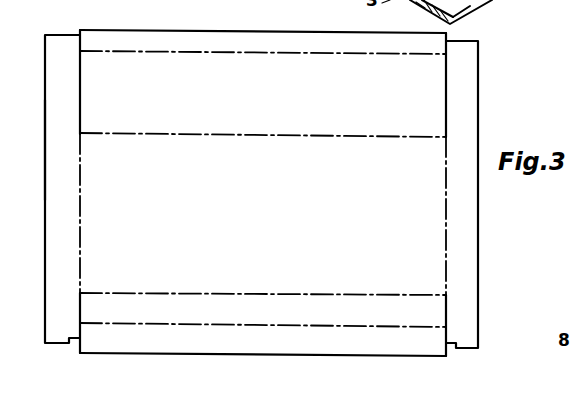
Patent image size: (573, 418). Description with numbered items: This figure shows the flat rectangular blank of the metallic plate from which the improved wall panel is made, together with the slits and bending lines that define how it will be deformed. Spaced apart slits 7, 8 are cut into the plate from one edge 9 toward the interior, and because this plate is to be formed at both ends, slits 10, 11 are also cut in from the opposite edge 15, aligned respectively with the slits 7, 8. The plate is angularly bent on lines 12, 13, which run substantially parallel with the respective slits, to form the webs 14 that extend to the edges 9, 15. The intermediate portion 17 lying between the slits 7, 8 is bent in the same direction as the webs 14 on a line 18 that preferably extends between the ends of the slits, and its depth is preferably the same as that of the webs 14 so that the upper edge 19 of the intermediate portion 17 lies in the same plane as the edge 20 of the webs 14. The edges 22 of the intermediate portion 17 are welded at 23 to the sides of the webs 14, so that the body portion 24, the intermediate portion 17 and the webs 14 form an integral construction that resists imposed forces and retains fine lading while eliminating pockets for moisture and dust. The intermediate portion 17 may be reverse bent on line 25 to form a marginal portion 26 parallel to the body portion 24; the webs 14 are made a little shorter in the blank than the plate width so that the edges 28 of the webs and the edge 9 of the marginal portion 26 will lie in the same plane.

The slit 7 is at (81, 93).
The slit 8 is at (445, 88).
The edge 9 is at (101, 30).
The slit 10 is at (81, 313).
The slit 11 is at (445, 312).
The bending line 12 is at (81, 203).
The bending line 13 is at (445, 209).
The web 14 is at (261, 191).
The edge 15 is at (98, 354).
The intermediate portion 17 is at (263, 93).
The bending line 18 is at (202, 133).
The upper edge 19 is at (176, 52).
The edge 20 is at (45, 153).
The edge 22 is at (81, 108).
The weld 23 is at (81, 123).
The body portion 24 is at (263, 214).
The bending line 25 is at (347, 54).
The marginal portion 26 is at (263, 43).
The edge 28 is at (171, 30).